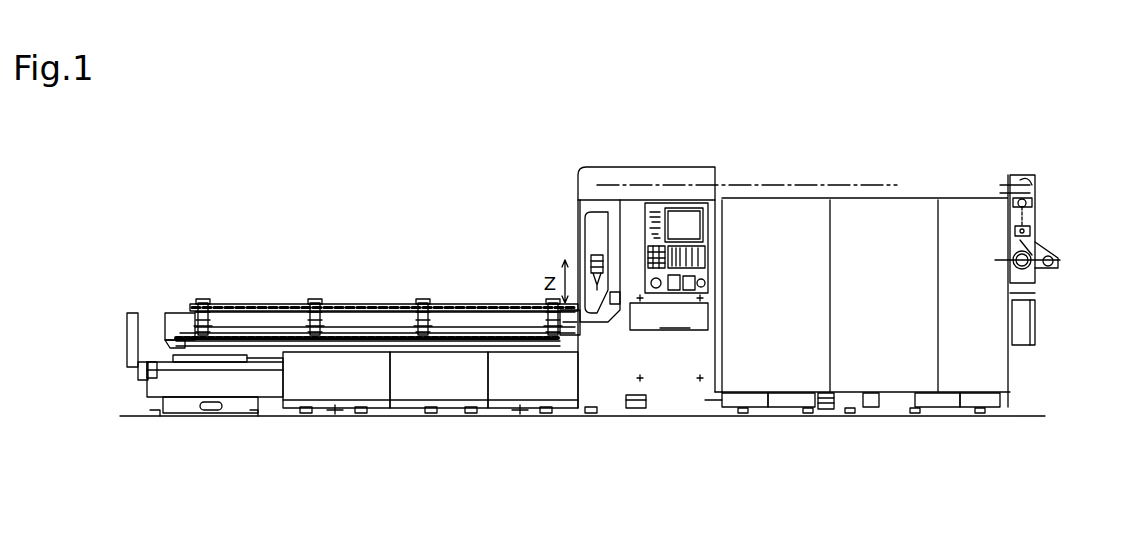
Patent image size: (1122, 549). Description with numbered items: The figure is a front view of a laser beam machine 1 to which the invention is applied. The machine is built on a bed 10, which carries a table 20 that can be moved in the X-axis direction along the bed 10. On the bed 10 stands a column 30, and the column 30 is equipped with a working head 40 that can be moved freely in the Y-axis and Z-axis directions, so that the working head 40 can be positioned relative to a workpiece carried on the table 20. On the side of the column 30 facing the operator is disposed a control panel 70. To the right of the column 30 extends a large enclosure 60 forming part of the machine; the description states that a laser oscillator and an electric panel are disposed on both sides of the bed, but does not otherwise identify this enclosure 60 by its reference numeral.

The laser beam machine 1 is at (1053, 131).
The bed 10 is at (532, 390).
The table 20 is at (371, 320).
The column 30 is at (623, 180).
The working head 40 is at (593, 252).
The control cabinet 60 is at (900, 348).
The control panel 70 is at (692, 207).